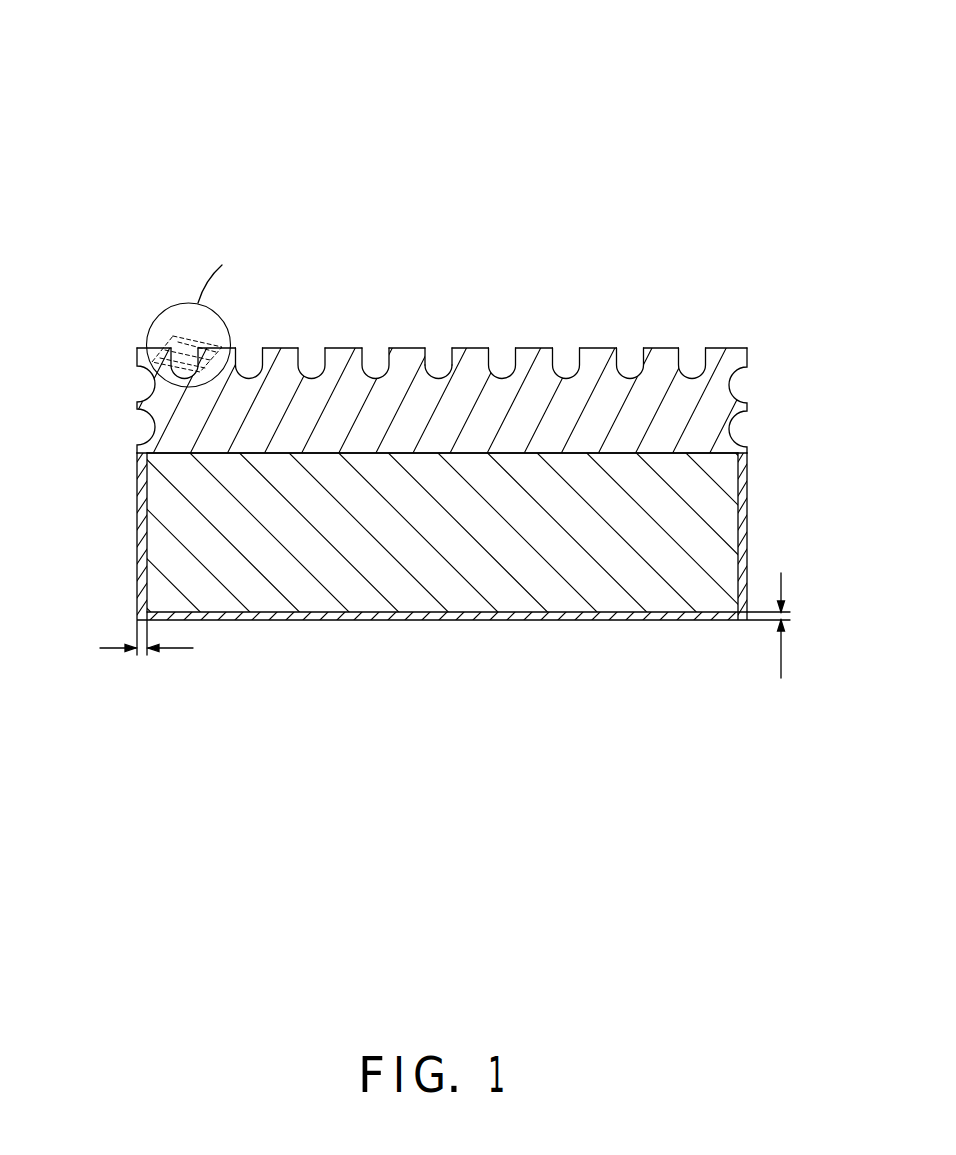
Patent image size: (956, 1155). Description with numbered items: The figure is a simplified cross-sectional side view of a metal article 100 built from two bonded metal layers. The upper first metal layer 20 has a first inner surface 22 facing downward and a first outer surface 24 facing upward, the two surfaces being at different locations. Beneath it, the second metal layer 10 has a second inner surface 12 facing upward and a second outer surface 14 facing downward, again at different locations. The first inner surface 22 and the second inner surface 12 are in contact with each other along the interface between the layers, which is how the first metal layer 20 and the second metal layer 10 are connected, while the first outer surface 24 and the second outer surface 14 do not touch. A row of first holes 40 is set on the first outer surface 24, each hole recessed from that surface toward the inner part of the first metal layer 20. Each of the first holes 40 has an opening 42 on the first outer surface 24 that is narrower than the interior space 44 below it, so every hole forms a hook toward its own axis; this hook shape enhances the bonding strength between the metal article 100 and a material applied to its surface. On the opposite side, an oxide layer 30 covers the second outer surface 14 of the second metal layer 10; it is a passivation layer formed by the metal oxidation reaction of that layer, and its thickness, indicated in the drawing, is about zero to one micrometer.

The metal article 100 is at (452, 41).
The second metal layer 10 is at (447, 532).
The second inner surface 12 is at (183, 455).
The second outer surface 14 is at (155, 553).
The first metal layer 20 is at (430, 344).
The first inner surface 22 is at (212, 452).
The first outer surface 24 is at (137, 443).
The oxide layer 30 is at (745, 543).
The first holes 40 is at (438, 307).
The opening 42 is at (433, 348).
The interior space 44 is at (442, 368).